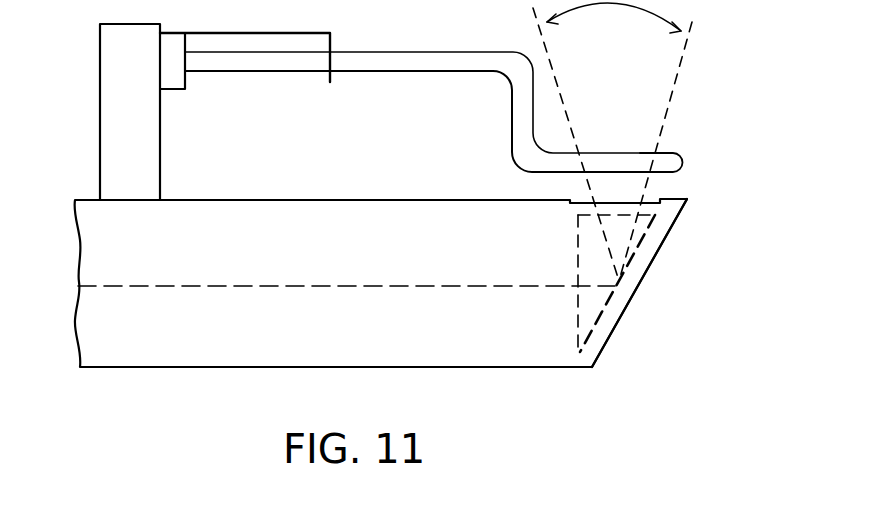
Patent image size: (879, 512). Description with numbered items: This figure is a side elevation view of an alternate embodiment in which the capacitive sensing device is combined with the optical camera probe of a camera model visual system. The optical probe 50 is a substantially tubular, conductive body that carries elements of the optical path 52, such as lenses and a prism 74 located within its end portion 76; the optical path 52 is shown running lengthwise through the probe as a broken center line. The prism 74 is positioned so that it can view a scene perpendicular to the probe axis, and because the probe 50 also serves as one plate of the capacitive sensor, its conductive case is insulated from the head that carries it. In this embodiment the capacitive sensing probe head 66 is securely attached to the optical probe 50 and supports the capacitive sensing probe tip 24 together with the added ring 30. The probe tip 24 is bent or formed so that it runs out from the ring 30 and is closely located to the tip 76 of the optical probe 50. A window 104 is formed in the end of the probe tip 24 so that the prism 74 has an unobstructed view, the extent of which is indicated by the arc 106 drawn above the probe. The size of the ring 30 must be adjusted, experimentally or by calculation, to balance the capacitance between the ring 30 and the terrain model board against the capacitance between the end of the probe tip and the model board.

The capacitive sensing probe tip 24 is at (463, 72).
The ring 30 is at (329, 78).
The optical probe 50 is at (217, 384).
The optical path 52 is at (400, 288).
The camera probe head assembly 66 is at (100, 103).
The prism 74 is at (639, 283).
The end portion 76 is at (648, 268).
The window 104 is at (677, 147).
The arc 106 is at (621, 5).